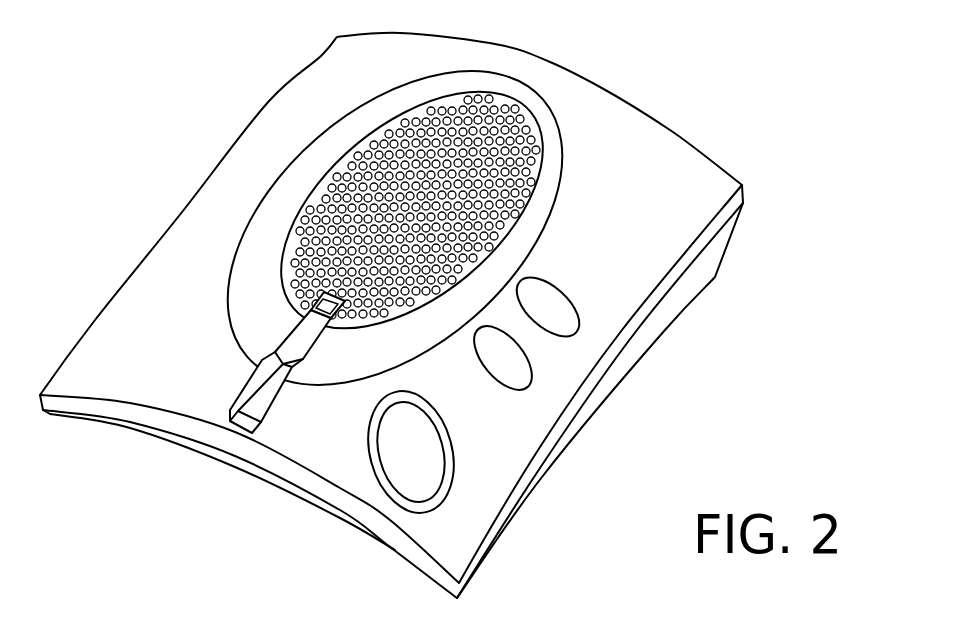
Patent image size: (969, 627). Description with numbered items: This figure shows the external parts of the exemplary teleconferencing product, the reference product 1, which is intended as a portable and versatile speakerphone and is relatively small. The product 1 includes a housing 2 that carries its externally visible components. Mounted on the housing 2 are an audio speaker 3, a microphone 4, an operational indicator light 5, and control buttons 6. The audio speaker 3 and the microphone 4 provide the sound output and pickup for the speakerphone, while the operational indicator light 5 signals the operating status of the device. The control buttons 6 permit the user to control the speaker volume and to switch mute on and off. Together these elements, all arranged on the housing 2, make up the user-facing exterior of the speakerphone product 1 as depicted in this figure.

The Chat 50 1 is at (155, 108).
The housing 2 is at (675, 160).
The audio speaker 3 is at (424, 148).
The microphone 4 is at (262, 400).
The operational indicator light 5 is at (323, 300).
The control buttons 6 is at (588, 283).